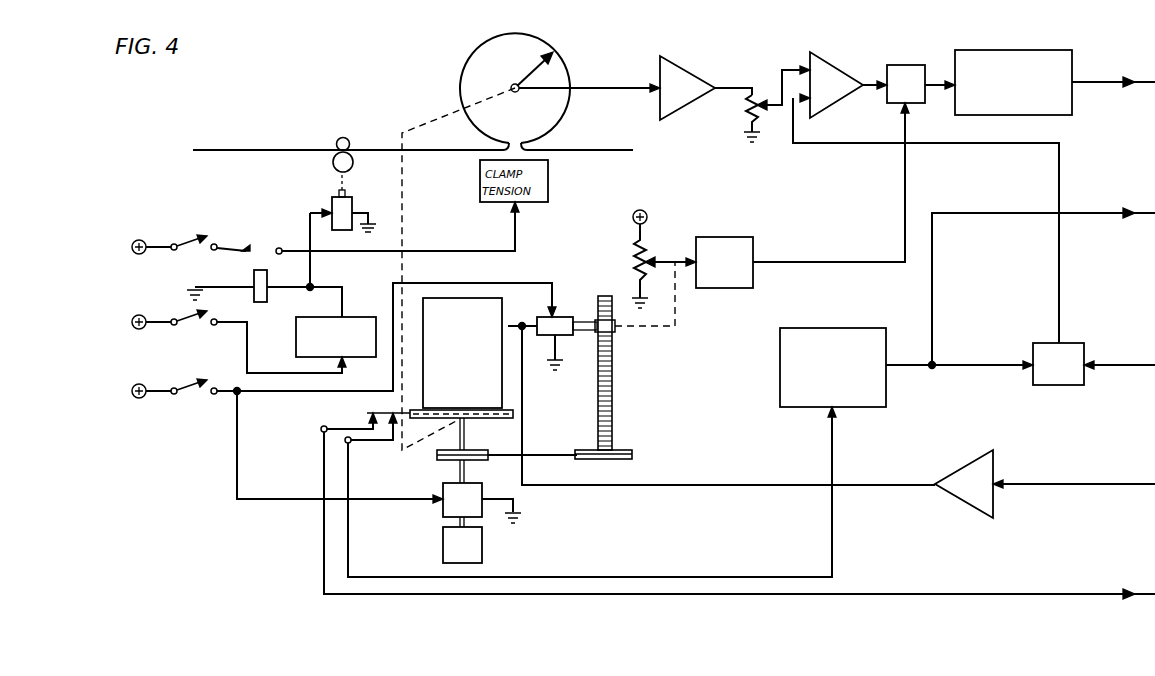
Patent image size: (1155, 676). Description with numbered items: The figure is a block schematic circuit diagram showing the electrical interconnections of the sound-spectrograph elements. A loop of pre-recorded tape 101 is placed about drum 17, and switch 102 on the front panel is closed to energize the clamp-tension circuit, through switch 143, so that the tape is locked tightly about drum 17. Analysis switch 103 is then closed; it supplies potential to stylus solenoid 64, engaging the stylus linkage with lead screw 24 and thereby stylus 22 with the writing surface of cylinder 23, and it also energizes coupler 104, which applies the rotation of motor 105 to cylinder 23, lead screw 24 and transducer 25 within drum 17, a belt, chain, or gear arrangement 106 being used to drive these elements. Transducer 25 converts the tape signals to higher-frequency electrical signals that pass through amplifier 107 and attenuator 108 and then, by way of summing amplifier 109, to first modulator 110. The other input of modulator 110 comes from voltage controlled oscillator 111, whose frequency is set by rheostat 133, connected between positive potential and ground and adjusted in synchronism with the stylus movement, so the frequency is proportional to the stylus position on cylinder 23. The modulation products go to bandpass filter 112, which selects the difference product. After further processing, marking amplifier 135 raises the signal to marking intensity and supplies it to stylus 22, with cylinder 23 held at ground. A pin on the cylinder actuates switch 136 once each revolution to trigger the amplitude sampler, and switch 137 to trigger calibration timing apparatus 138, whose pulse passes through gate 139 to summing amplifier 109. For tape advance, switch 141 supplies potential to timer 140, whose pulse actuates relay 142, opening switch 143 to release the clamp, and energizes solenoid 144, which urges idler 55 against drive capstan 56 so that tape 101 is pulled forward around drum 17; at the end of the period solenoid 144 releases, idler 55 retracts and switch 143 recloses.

The drum 17 is at (468, 64).
The transducer 25 is at (558, 54).
The pre-recorded tape 101 is at (580, 150).
The idler 55 is at (352, 164).
The drive capstan 56 is at (346, 140).
The solenoid 144 is at (329, 202).
The switch 143 is at (253, 251).
The switch 102 is at (208, 237).
The relay 142 is at (267, 295).
The switch 141 is at (203, 331).
The timer 140 is at (296, 342).
The analysis switch 103 is at (204, 400).
The switch 136 is at (347, 424).
The switch 137 is at (360, 443).
The cylinder 23 is at (472, 298).
The stylus 22 is at (518, 326).
The stylus solenoid 64 is at (575, 317).
The lead screw 24 is at (612, 393).
The rheostat 133 is at (634, 266).
The voltage controlled oscillator 111 is at (730, 237).
The amplifier 107 is at (679, 62).
The attenuator 108 is at (764, 88).
The summing amplifier 109 is at (818, 60).
The first modulator 110 is at (899, 65).
The bandpass filter 112 is at (1020, 50).
The calibration timing apparatus 138 is at (836, 328).
The gate 139 is at (1071, 343).
The marking amplifier 135 is at (965, 501).
The coupler 104 is at (447, 483).
The motor 105 is at (443, 549).
The belt, chain, or gear arrangement 106 is at (547, 458).